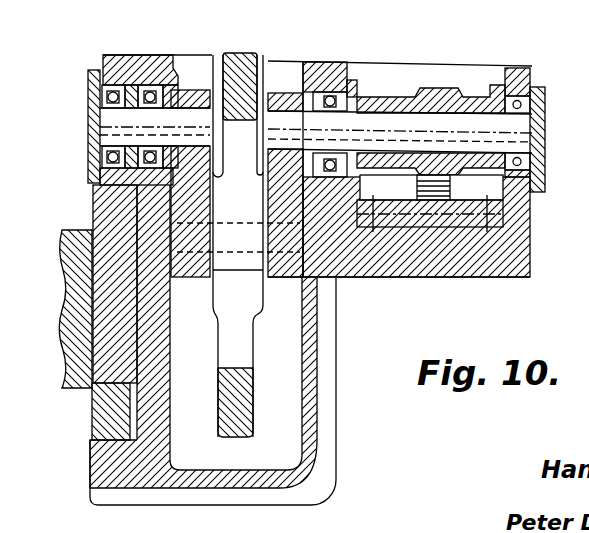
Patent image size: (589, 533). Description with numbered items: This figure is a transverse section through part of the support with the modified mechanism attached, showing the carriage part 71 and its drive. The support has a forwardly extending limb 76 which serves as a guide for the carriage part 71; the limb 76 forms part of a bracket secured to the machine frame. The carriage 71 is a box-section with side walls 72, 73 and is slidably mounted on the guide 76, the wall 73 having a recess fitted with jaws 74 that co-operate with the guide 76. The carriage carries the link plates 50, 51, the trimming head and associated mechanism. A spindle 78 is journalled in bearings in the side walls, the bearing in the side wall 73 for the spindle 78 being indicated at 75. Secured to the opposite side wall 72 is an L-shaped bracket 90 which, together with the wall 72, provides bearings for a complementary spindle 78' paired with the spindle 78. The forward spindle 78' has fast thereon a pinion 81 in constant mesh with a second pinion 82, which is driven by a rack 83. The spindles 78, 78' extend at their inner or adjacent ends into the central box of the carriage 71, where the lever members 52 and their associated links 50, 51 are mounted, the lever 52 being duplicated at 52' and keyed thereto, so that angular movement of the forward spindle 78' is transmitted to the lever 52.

The link plate 50 is at (289, 42).
The link plate 51 is at (225, 393).
The lever member 52 is at (190, 216).
The duplicate lever member 52' is at (283, 220).
The carriage part 71 is at (353, 439).
The side wall 72 is at (310, 390).
The side wall 73 is at (152, 398).
The jaws 74 is at (140, 418).
The bearing 75 is at (148, 56).
The forwardly extending limb 76 is at (102, 267).
The spindle 78 is at (289, 119).
The forward spindle 78' is at (442, 84).
The pinion 81 is at (442, 88).
The second pinion 82 is at (478, 190).
The rack 83 is at (440, 197).
The bracket 90 is at (522, 260).